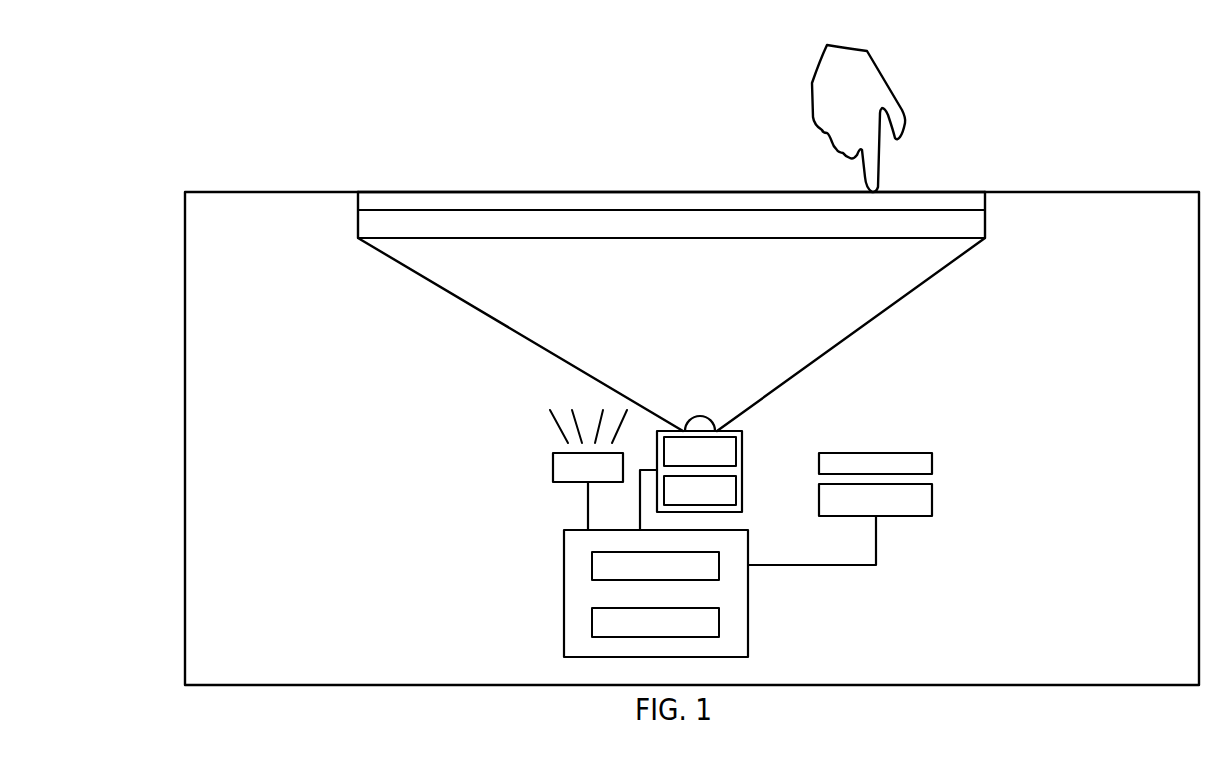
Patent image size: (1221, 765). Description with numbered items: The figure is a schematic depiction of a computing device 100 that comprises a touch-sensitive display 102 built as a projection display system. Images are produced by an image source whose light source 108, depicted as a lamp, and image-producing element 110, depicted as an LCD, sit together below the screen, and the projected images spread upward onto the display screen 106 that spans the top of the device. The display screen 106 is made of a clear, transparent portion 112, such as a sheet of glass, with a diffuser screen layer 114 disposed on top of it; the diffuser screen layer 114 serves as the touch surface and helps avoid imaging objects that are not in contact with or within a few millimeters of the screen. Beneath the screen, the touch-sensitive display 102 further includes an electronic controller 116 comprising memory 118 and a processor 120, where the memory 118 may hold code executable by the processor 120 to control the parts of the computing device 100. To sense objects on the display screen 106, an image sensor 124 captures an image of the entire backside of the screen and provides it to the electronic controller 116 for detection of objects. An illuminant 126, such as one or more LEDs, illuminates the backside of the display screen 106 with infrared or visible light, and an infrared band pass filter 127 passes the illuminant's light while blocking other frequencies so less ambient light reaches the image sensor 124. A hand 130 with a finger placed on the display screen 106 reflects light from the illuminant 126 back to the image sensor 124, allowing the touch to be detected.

The computing device 100 is at (256, 72).
The touch-sensitive display 102 is at (452, 158).
The display screen 106 is at (528, 190).
The light source 108 is at (738, 487).
The image-producing element 110 is at (738, 448).
The clear, transparent portion 112 is at (668, 221).
The diffuser screen layer 114 is at (727, 206).
The electronic controller 116 is at (750, 603).
The memory 118 is at (591, 568).
The processor 120 is at (591, 624).
The image sensor 124 is at (920, 503).
The illuminant 126 is at (552, 470).
The infrared band pass filter 127 is at (922, 464).
The hand 130 is at (873, 93).